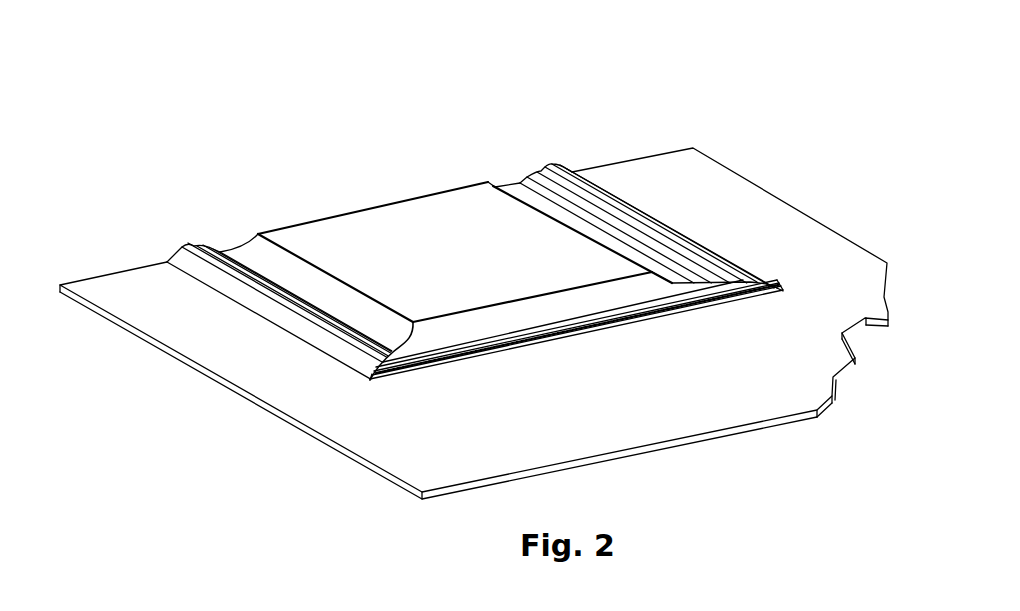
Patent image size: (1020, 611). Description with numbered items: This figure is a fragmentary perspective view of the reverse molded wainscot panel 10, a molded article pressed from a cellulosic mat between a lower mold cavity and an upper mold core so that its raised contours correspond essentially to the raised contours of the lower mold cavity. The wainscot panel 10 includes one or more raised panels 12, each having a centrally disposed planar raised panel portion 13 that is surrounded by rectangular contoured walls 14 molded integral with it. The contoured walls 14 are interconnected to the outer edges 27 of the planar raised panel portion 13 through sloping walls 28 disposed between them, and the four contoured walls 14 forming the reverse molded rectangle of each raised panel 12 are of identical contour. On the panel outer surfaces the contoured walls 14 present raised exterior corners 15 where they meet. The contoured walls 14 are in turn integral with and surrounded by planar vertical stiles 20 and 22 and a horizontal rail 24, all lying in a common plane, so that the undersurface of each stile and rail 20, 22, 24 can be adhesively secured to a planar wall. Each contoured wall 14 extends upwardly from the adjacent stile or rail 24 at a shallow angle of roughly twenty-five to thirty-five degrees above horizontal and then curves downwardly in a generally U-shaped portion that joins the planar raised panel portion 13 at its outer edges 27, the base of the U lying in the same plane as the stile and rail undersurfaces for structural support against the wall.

The wainscot panel 10 is at (721, 141).
The raised panel 12 is at (465, 196).
The planar raised panel portion 13 is at (474, 244).
The contoured wall 14 is at (588, 163).
The raised exterior corner 15 is at (723, 275).
The vertical stile 20 is at (245, 348).
The vertical stile 22 is at (714, 209).
The horizontal rail 24 is at (672, 389).
The outer edge 27 is at (269, 242).
The sloping wall 28 is at (555, 203).